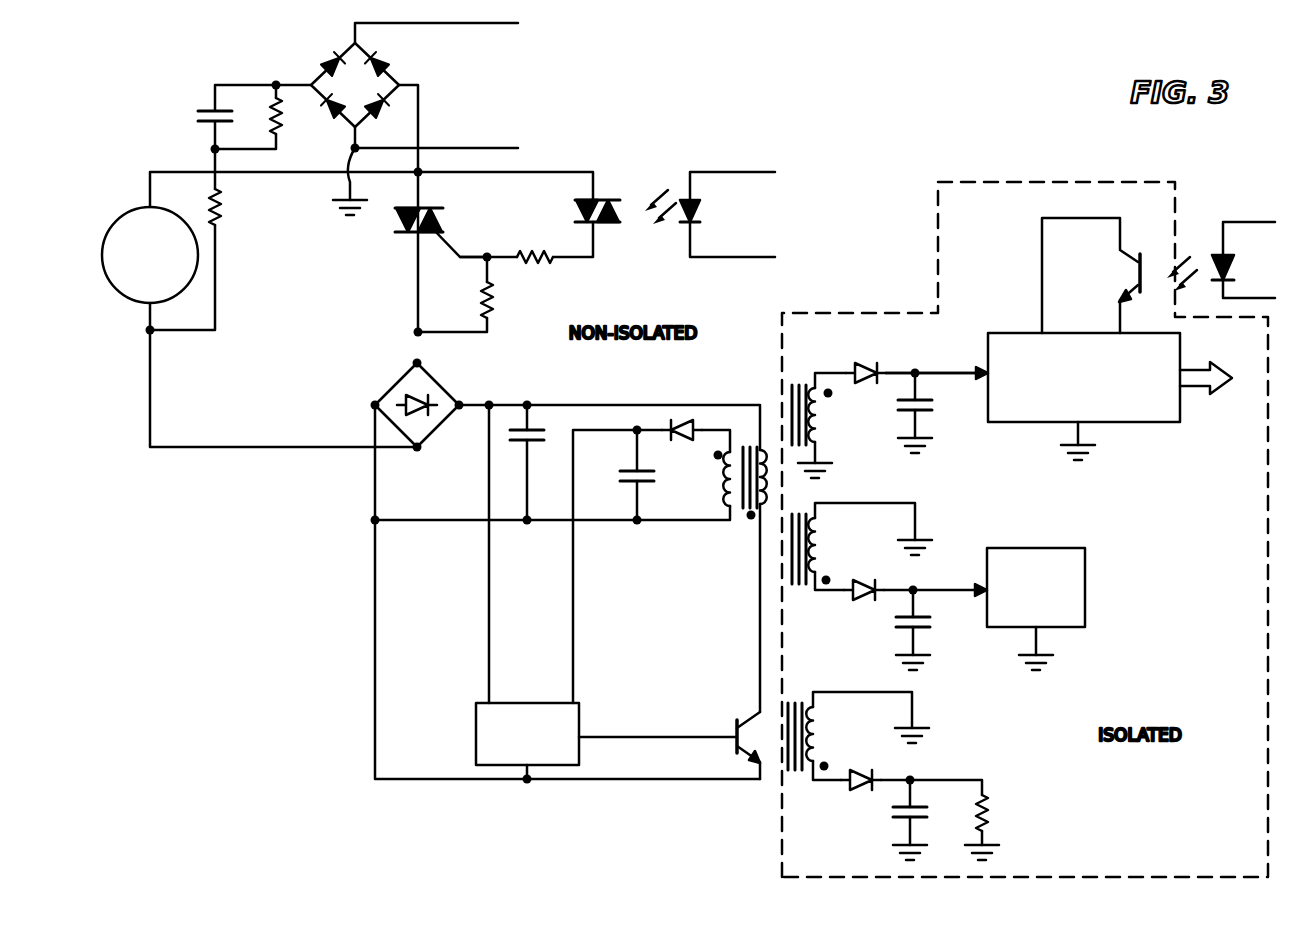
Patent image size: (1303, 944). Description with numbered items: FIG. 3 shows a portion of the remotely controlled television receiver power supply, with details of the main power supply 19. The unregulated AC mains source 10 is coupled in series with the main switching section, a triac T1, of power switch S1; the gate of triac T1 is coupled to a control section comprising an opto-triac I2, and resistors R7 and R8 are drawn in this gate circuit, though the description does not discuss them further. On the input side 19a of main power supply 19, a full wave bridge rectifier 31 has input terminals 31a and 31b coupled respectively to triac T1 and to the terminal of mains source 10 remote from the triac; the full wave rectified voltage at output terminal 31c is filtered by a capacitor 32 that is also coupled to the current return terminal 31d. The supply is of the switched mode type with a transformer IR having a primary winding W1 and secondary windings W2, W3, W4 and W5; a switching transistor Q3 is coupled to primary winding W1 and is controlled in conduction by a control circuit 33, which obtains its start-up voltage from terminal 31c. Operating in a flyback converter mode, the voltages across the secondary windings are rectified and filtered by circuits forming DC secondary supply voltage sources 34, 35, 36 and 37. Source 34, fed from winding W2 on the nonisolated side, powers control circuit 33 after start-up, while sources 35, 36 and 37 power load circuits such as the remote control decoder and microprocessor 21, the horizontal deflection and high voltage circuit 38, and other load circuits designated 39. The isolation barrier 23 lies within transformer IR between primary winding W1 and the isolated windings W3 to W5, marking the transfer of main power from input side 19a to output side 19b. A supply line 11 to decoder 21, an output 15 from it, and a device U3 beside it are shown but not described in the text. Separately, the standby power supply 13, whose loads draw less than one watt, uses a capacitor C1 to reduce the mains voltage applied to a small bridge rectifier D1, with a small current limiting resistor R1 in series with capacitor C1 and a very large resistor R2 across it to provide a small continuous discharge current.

The source of unregulated AC mains input voltage 10 is at (110, 224).
The standby power supply 13 is at (414, 119).
The small bridge rectifier D1 is at (355, 85).
The capacitor C1 is at (241, 128).
The current limiting resistor R1 is at (200, 251).
The resistor R2 is at (262, 115).
The main switching section T1 is at (425, 211).
The power switch S1 is at (596, 247).
The optocoupler triac I2 is at (639, 182).
The resistor R7 is at (455, 294).
The resistor R8 is at (506, 271).
The full wave bridge rectifier 31 is at (415, 416).
The input terminal 31a is at (414, 362).
The input terminal 31b is at (420, 455).
The output terminal 31c is at (468, 400).
The current return terminal 31d is at (372, 405).
The capacitor 32 is at (535, 462).
The control circuit 33 is at (476, 716).
The secondary supply voltage source 34 is at (581, 472).
The main power supply 19 is at (618, 603).
The input side 19a is at (651, 561).
The output side 19b is at (887, 586).
The transformer IR is at (735, 388).
The primary winding W1 is at (772, 482).
The secondary winding W2 is at (727, 478).
The secondary winding W3 is at (813, 390).
The secondary winding W4 is at (812, 578).
The secondary winding W5 is at (810, 708).
The switching transistor Q3 is at (736, 722).
The isolation barrier 23 is at (1012, 180).
The secondary supply voltage source 35 is at (890, 408).
The secondary supply voltage source 36 is at (887, 586).
The secondary supply voltage source 37 is at (909, 761).
The supply voltage line 11 is at (947, 372).
The remote control decoder and microprocessor 21 is at (1128, 425).
The output signal 15 is at (1196, 390).
The infrared LED U3 is at (1270, 278).
The horizontal deflection and high voltage circuit 38 is at (1087, 590).
The other load circuits 39 is at (990, 815).